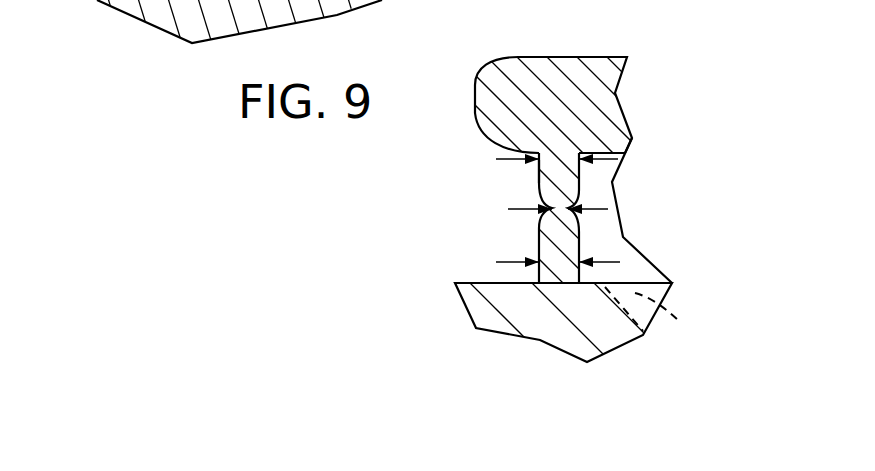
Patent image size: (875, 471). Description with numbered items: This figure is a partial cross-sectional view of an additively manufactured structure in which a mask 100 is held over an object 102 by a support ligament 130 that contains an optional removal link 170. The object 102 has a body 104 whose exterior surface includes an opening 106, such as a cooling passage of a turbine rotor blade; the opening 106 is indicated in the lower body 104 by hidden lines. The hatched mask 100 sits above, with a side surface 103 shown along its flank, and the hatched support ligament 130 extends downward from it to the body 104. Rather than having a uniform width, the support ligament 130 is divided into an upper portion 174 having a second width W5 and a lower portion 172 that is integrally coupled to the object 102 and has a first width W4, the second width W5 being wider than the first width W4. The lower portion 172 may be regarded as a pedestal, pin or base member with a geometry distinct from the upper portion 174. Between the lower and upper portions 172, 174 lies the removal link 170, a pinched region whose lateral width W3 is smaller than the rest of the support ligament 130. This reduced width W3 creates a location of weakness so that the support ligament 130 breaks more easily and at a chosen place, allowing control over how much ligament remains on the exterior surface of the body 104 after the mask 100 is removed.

The mask 100 is at (570, 67).
The side surface of tread block 103 is at (620, 92).
The upper portion 174 is at (570, 183).
The removal link 170 is at (622, 216).
The lower portion 172 is at (572, 245).
The support ligament 130 is at (548, 172).
The opening 106 is at (668, 321).
The object 102 is at (513, 325).
The body 104 is at (483, 315).
The second width W5 is at (535, 159).
The width of removal link W3 is at (537, 206).
The first width W4 is at (536, 263).